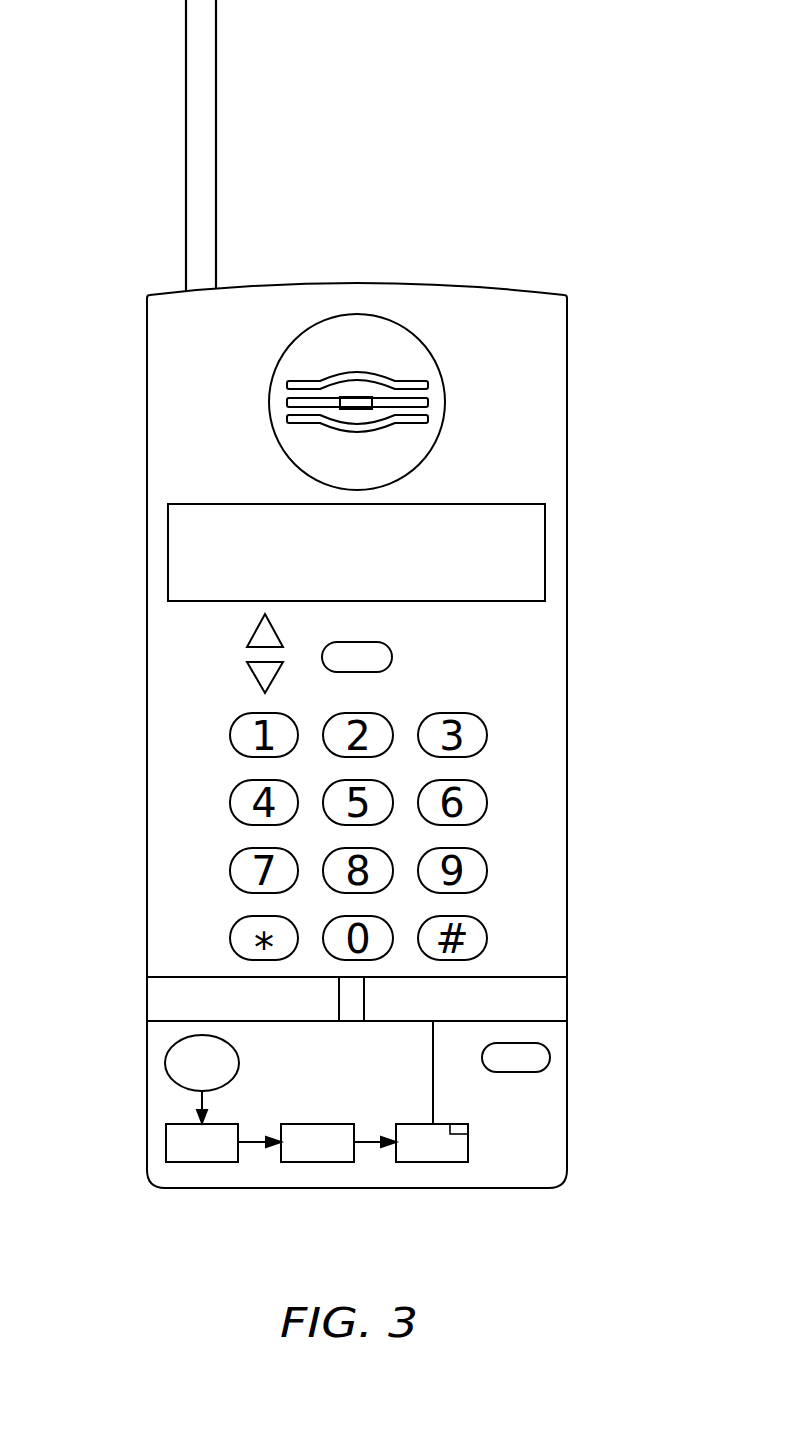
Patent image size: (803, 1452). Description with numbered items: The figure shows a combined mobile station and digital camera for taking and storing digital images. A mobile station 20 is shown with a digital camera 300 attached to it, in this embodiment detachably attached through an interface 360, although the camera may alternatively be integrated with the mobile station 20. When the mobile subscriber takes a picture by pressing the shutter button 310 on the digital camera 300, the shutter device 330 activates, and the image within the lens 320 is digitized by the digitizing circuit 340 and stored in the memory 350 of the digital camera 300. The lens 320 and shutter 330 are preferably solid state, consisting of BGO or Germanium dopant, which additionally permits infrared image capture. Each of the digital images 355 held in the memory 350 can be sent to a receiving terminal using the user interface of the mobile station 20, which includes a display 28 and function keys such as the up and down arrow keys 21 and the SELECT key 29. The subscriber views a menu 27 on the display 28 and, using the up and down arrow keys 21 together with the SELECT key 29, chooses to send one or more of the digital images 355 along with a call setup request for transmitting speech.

The mobile station 20 is at (567, 732).
The up and down arrow keys 21 is at (249, 673).
The menu 27 is at (137, 507).
The display 28 is at (545, 552).
The SELECT key 29 is at (392, 657).
The digital camera 300 is at (568, 1157).
The shutter button 310 is at (550, 1057).
The lens 320 is at (165, 1060).
The shutter device 330 is at (166, 1142).
The digitizing circuit 340 is at (305, 1123).
The memory 350 is at (420, 1123).
The digital images 355 is at (460, 1124).
The interface 360 is at (568, 1021).